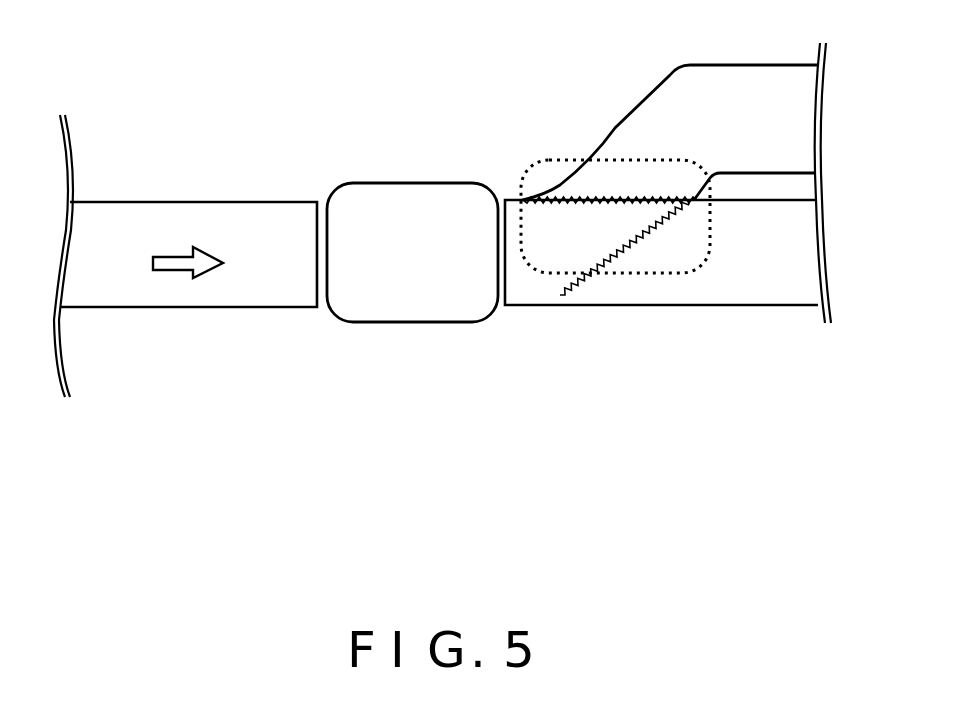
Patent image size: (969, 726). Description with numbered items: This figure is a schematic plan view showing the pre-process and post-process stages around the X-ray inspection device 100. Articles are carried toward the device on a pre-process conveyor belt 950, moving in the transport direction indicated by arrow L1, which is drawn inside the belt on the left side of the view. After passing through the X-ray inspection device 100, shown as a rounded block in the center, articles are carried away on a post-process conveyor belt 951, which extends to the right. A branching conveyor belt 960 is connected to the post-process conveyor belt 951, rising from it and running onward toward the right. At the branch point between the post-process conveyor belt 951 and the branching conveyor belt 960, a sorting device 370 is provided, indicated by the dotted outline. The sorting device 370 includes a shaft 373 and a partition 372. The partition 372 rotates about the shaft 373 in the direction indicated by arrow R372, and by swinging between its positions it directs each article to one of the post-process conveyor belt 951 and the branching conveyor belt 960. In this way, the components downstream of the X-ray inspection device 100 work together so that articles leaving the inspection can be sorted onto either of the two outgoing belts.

The pre-process conveyor belt 950 is at (280, 200).
The arrow L1 is at (172, 255).
The X-ray inspection device 100 is at (383, 174).
The post-process conveyor belt 951 is at (730, 307).
The branching conveyor belt 960 is at (757, 62).
The sorting device 370 is at (570, 158).
The partition 372 is at (582, 276).
The shaft 373 is at (687, 208).
The arrow R372 is at (545, 207).